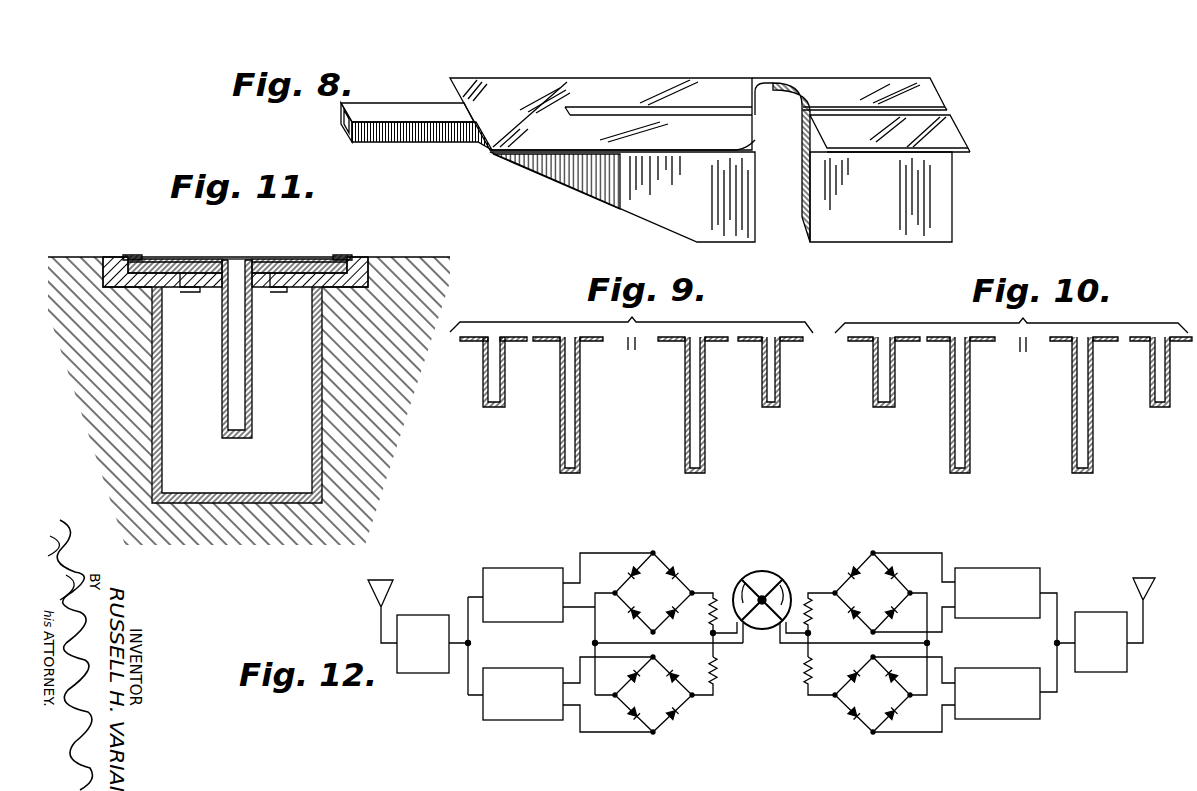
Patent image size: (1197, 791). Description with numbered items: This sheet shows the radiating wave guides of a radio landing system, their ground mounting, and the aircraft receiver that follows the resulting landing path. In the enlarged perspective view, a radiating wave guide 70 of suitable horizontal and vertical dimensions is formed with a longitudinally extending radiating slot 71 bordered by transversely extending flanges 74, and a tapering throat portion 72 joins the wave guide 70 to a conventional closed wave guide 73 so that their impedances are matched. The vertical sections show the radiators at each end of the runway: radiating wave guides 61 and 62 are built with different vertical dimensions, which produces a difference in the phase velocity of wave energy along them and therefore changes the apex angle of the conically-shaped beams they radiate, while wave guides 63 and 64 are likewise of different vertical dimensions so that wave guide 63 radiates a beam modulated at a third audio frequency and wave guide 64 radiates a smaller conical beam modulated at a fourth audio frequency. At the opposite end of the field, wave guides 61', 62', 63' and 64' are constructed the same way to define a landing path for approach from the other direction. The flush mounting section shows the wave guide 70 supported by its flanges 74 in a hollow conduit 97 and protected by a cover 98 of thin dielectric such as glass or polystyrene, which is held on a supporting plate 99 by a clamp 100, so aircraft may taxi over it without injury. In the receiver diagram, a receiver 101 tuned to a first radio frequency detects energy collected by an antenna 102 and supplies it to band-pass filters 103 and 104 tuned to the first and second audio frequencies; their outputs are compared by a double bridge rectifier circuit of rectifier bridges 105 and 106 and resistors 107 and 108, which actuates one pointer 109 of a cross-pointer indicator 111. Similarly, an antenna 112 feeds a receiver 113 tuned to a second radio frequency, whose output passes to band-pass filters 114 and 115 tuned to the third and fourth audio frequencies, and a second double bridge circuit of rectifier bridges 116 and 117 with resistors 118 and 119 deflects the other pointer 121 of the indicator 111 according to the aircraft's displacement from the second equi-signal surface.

In FIG. 8, the wave guide 70 is at (923, 232).
In FIG. 11, the wave guide 70 is at (248, 353).
In FIG. 8, the radiating slot 71 is at (927, 108).
In FIG. 8, the tapering throat portion 72 is at (607, 187).
In FIG. 8, the closed wave guide 73 is at (400, 136).
In FIG. 8, the flanges 74 is at (950, 133).
In FIG. 11, the flanges 74 is at (257, 278).
In FIG. 11, the hollow conduit 97 is at (223, 493).
In FIG. 11, the cover 98 is at (240, 258).
In FIG. 11, the supporting plate 99 is at (300, 258).
In FIG. 11, the clamp 100 is at (338, 257).
In FIG. 9, the radiating wave guide 61 is at (791, 373).
In FIG. 9, the radiating wave guide 62 is at (671, 405).
In FIG. 9, the radiating wave guide 63 is at (466, 372).
In FIG. 9, the radiating wave guide 64 is at (594, 405).
In FIG. 10, the radiating wave guide 61' is at (1159, 390).
In FIG. 10, the radiating wave guide 62' is at (1061, 405).
In FIG. 10, the radiating wave guide 63' is at (876, 391).
In FIG. 10, the radiating wave guide 64' is at (981, 405).
In FIG. 12, the receiver 101 is at (405, 670).
In FIG. 12, the antenna 102 is at (368, 590).
In FIG. 12, the band-pass filter 103 is at (497, 718).
In FIG. 12, the band-pass filter 104 is at (520, 567).
In FIG. 12, the rectifier bridge 105 is at (670, 705).
In FIG. 12, the rectifier bridge 106 is at (658, 563).
In FIG. 12, the resistor 107 is at (717, 675).
In FIG. 12, the resistor 108 is at (715, 603).
In FIG. 12, the pointer 109 is at (778, 587).
In FIG. 12, the cross-pointer indicator 111 is at (765, 568).
In FIG. 12, the antenna 112 is at (1133, 583).
In FIG. 12, the receiver 113 is at (1110, 667).
In FIG. 12, the band-pass filter 114 is at (1028, 713).
In FIG. 12, the band-pass filter 115 is at (1025, 568).
In FIG. 12, the rectifier bridge 116 is at (868, 718).
In FIG. 12, the rectifier bridge 117 is at (875, 553).
In FIG. 12, the resistor 118 is at (808, 677).
In FIG. 12, the resistor 119 is at (808, 607).
In FIG. 12, the pointer 121 is at (748, 573).